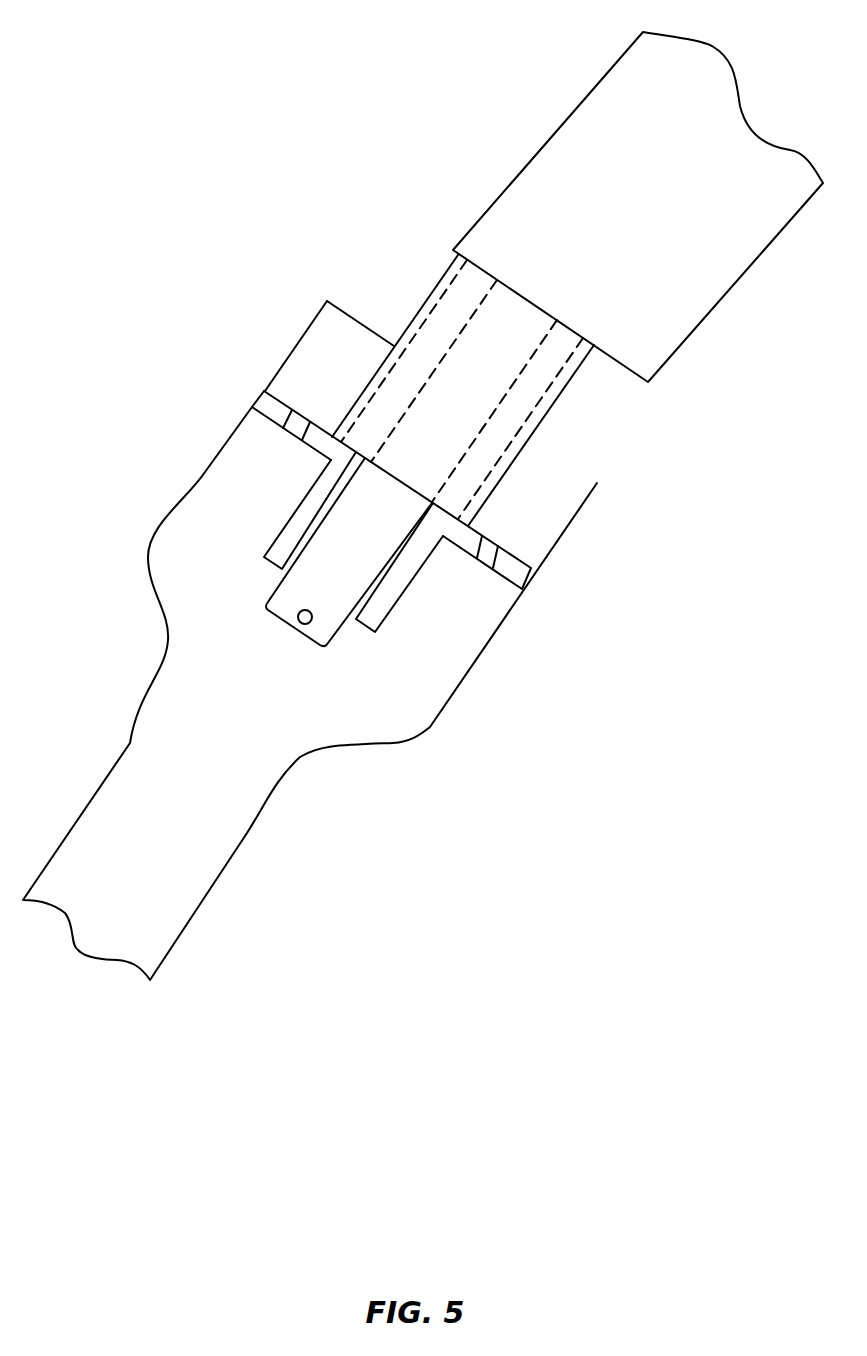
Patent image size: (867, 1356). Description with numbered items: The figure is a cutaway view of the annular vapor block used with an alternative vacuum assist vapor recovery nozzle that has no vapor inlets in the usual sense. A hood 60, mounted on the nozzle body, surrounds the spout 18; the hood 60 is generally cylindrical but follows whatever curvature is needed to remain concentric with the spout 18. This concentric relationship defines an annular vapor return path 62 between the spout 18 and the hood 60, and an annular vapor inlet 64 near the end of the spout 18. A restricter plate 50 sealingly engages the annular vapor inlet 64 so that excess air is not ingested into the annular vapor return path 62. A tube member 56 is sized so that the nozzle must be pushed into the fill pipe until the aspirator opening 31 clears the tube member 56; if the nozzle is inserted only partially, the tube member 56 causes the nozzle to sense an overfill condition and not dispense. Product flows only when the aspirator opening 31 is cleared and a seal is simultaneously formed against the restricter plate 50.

The spout 18 is at (453, 343).
The aspirator opening 31 is at (296, 626).
The restricter plate 50 is at (266, 422).
The tube member 56 is at (277, 540).
The hood 60 is at (572, 378).
The annular vapor return path 62 is at (520, 397).
The annular vapor inlet 64 is at (443, 513).